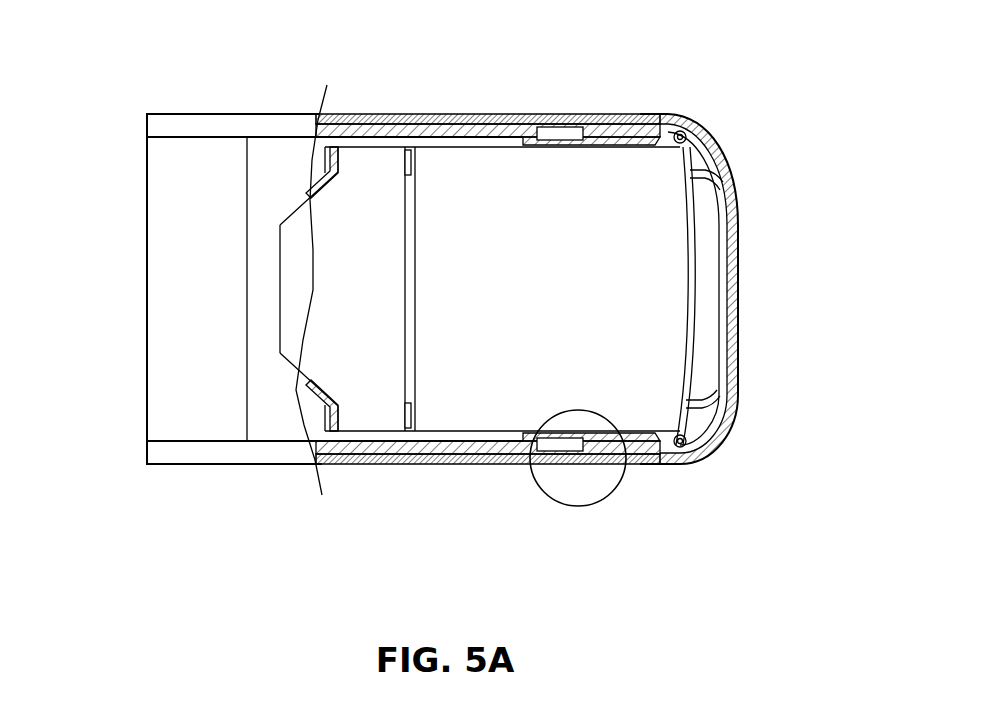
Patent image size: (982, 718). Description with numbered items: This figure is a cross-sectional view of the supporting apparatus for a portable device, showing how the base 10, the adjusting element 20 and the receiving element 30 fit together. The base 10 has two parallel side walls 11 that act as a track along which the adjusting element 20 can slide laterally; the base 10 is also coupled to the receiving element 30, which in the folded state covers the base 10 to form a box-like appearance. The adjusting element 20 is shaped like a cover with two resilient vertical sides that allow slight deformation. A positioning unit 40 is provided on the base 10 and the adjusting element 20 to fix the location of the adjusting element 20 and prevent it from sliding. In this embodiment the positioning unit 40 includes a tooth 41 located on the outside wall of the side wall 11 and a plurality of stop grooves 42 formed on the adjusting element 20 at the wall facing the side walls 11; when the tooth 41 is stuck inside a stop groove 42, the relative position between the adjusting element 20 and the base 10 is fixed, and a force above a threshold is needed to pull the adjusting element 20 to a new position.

The base 10 is at (455, 289).
The side wall 11 is at (450, 114).
The adjusting element 20 is at (738, 268).
The receiving element 30 is at (200, 291).
The positioning unit 40 is at (503, 316).
The tooth 41 is at (628, 114).
The stop groove 42 is at (577, 114).